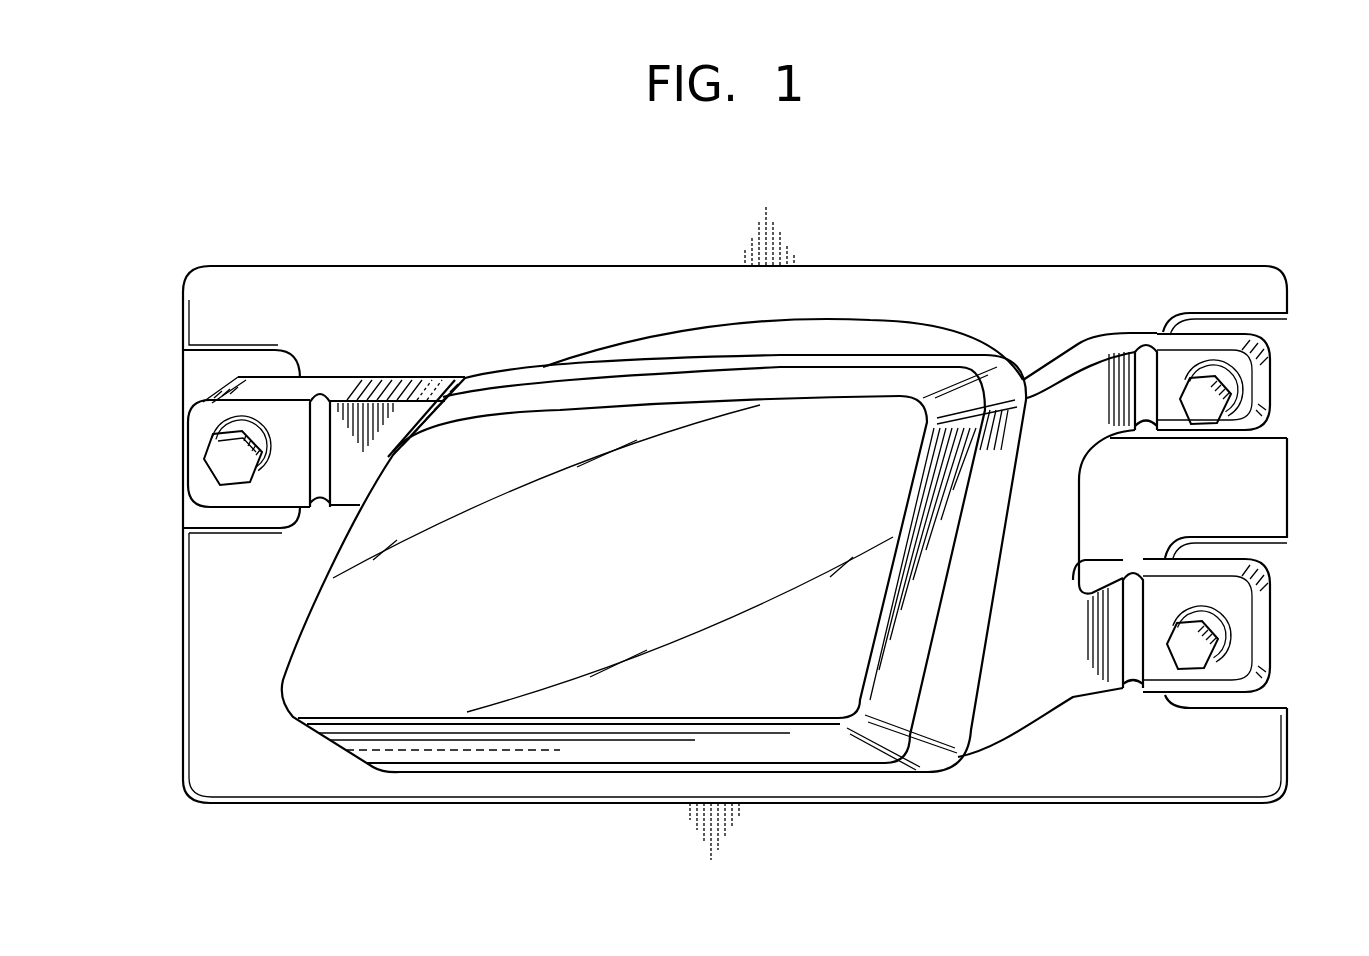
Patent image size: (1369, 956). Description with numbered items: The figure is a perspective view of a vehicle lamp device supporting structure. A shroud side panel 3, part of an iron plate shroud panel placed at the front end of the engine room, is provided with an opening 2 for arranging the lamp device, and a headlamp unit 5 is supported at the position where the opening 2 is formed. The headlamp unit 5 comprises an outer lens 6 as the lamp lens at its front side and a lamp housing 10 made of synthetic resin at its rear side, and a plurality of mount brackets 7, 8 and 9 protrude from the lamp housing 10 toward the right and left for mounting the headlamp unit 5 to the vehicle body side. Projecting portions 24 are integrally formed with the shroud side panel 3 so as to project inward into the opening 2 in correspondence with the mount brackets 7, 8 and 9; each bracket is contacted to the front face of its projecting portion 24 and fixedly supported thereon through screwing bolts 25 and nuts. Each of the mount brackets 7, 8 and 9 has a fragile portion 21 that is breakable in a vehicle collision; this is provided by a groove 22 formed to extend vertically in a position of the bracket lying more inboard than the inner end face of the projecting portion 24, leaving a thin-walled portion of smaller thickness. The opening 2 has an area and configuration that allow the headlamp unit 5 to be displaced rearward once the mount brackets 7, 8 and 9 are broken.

The opening 2 is at (547, 268).
The shroud side panel 3 is at (335, 245).
The headlamp unit 5 is at (870, 312).
The outer lens 6 is at (613, 591).
The mount bracket 7 is at (1248, 378).
The mount bracket 8 is at (1238, 615).
The mount bracket 9 is at (210, 423).
The lamp housing 10 is at (688, 327).
The fragile portion 21 is at (345, 390).
The groove 22 is at (320, 398).
The projecting portion 24 is at (240, 350).
The bolt 25 is at (222, 468).